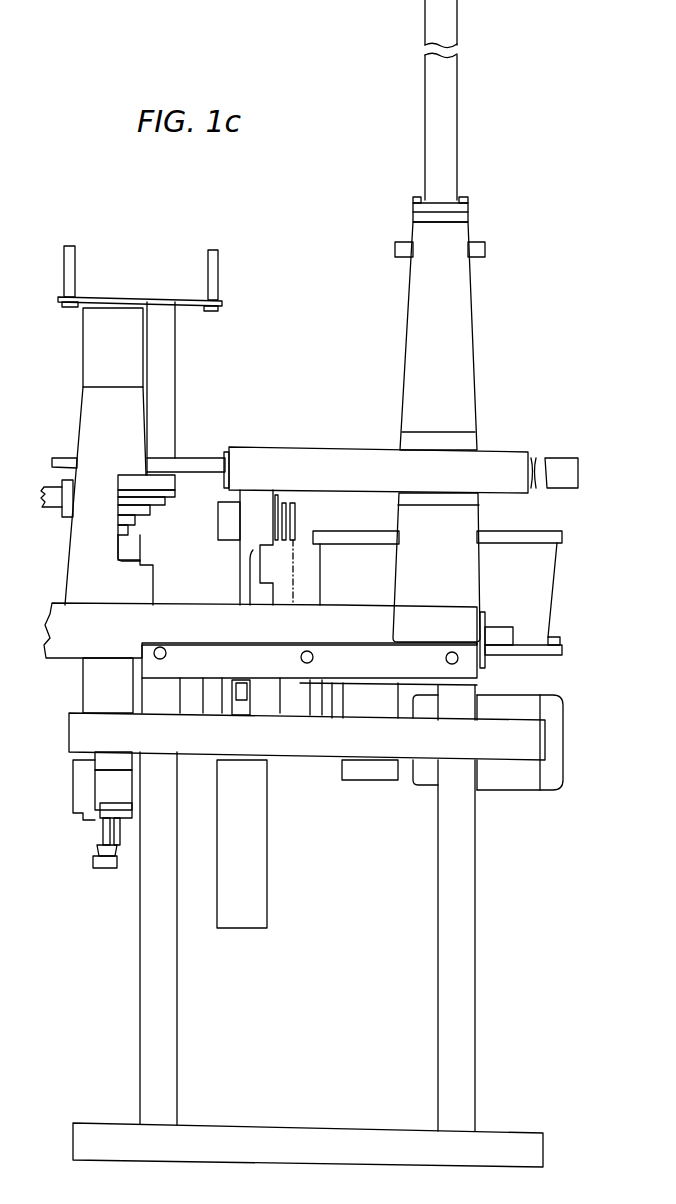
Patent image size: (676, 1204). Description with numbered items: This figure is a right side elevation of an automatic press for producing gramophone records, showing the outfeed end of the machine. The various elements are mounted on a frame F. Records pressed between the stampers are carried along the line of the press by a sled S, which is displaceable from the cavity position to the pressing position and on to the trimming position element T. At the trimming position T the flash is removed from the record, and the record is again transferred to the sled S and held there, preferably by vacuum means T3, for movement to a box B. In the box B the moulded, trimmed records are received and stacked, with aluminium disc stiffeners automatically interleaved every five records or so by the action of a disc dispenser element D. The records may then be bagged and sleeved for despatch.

The trimming position element T is at (74, 396).
The disc dispenser element D is at (384, 416).
The sled element S is at (40, 511).
The vacuum means T3 is at (160, 493).
The box B is at (562, 600).
The frame F is at (66, 669).